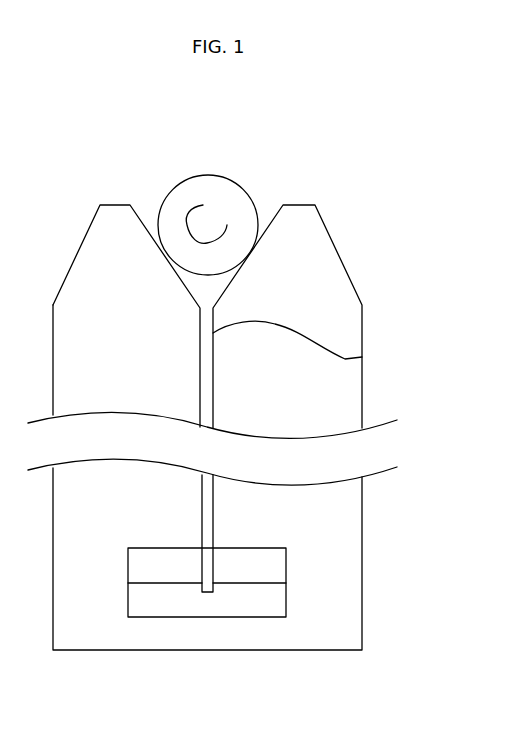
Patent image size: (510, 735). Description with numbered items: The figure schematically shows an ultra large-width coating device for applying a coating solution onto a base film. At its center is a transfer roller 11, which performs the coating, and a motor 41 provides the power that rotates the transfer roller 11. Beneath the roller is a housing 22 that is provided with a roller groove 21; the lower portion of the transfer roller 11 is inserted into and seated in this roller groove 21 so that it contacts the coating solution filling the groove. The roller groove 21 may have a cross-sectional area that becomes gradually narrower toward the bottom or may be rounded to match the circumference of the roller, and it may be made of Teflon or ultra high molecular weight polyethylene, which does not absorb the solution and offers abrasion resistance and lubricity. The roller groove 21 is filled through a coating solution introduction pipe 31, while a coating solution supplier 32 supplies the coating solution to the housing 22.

The transfer roller 11 is at (205, 175).
The roller groove 21 is at (178, 266).
The housing 22 is at (362, 320).
The coating solution introduction pipe 31 is at (362, 357).
The coating solution supplier 32 is at (270, 602).
The motor 41 is at (227, 225).